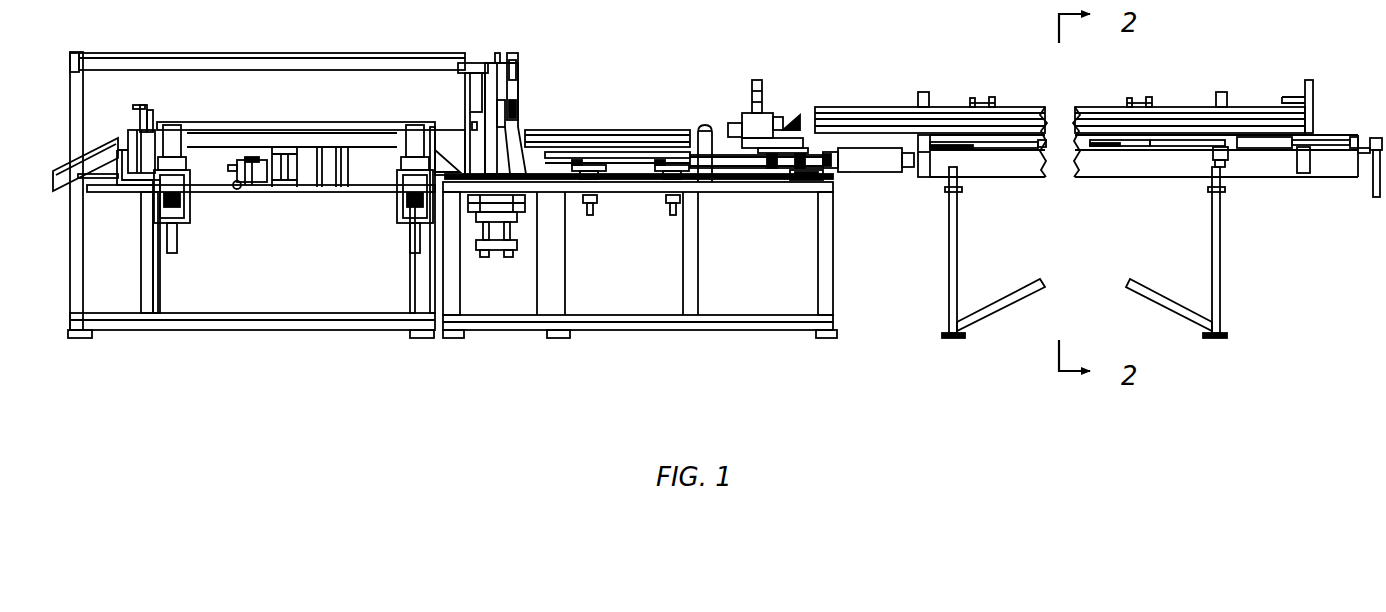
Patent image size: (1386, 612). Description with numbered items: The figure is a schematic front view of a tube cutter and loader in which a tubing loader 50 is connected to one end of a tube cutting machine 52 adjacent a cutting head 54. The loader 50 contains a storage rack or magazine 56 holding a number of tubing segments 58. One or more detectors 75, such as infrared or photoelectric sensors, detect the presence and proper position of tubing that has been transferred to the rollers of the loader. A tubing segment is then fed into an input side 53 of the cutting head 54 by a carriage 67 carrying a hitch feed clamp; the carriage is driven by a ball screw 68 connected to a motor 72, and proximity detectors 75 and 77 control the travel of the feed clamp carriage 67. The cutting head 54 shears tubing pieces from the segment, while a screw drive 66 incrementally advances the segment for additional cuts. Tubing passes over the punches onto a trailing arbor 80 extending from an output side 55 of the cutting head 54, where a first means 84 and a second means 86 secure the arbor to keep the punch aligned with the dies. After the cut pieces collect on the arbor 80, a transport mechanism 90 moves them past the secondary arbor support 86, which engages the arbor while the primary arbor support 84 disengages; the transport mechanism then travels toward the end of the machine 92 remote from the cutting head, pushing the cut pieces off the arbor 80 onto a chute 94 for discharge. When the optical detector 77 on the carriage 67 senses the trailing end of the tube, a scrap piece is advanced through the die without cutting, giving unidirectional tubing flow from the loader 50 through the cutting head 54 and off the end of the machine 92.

The tubing loader 50 is at (1247, 178).
The tube cutting machine 52 is at (681, 350).
The input side 53 is at (517, 115).
The cutting head 54 is at (500, 62).
The output side 55 is at (470, 83).
The storage rack or magazine 56 is at (935, 118).
The tubing segments 58 is at (863, 107).
The screw drive 66 is at (778, 183).
The carriage 67 is at (760, 113).
The ball screw 68 is at (740, 180).
The motor 72 is at (868, 165).
The detectors 75 is at (706, 125).
The proximity detector 77 is at (795, 120).
The trailing arbor 80 is at (222, 123).
The first means / primary arbor support 84 is at (177, 230).
The second means / secondary arbor support 86 is at (395, 205).
The transport mechanism 90 is at (462, 125).
The end of the machine 92 is at (52, 148).
The chute 94 is at (52, 192).